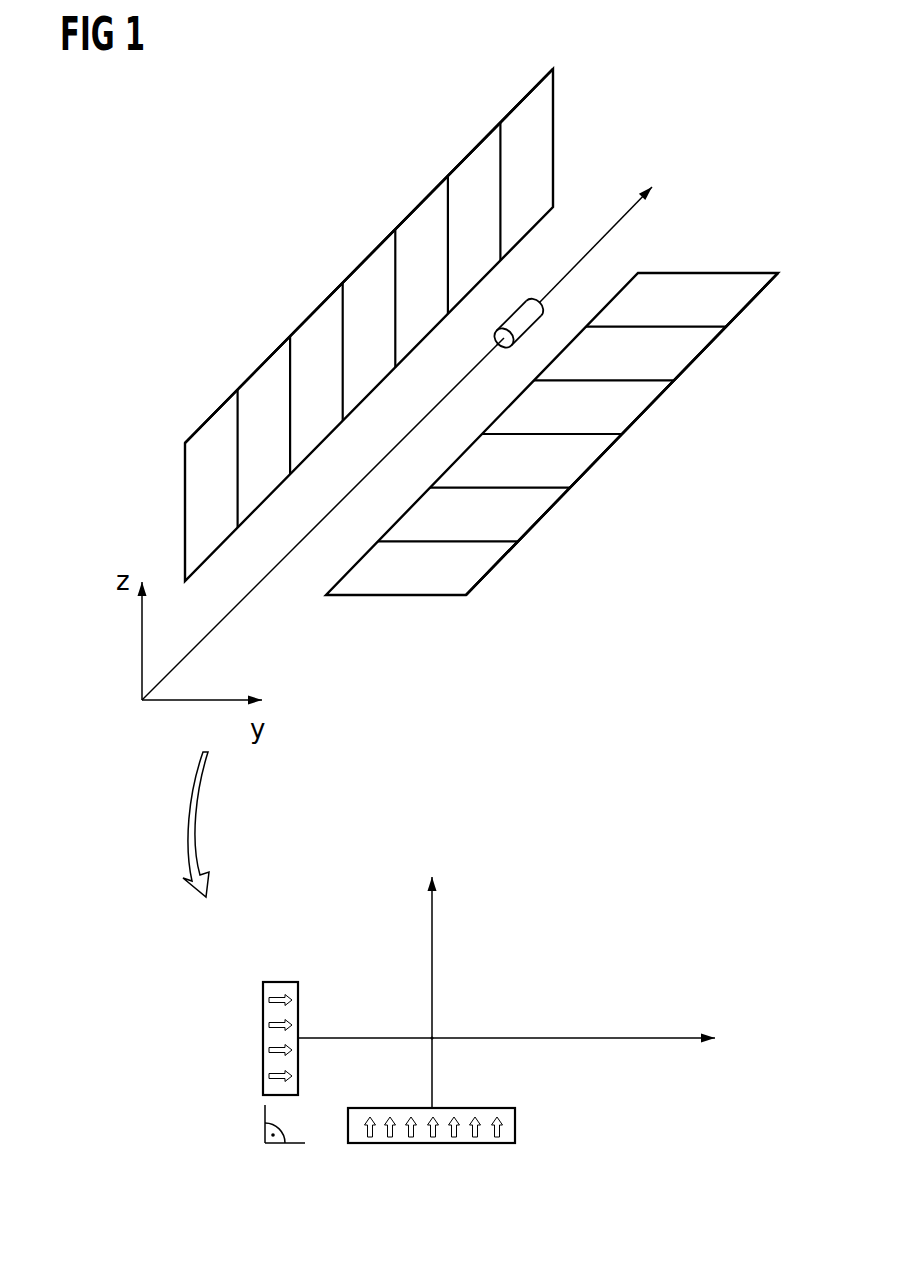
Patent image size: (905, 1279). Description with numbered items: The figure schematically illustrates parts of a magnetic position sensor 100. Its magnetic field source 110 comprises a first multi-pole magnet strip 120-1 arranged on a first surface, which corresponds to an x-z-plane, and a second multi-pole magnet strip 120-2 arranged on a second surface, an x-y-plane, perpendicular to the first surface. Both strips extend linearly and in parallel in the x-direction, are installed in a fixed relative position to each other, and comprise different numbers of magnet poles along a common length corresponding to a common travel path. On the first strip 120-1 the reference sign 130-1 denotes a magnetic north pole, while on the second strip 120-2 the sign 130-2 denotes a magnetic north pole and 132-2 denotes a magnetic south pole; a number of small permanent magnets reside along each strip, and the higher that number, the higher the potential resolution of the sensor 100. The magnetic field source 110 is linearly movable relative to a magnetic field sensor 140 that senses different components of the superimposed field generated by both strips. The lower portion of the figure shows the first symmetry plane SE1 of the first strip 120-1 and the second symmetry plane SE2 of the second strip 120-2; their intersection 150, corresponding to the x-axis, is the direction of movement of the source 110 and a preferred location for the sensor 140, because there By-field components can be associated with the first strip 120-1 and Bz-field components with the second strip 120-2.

The magnetic position sensor 100 is at (748, 98).
The magnetic field source 110 is at (611, 186).
The first multi-pole magnet strip 120-1 is at (168, 461).
The second multi-pole magnet strip 120-2 is at (474, 607).
The magnetic north pole 130-1 is at (422, 200).
The magnetic north pole 130-2 is at (698, 352).
The magnetic south pole 132-2 is at (367, 259).
The magnetic field sensor 140 is at (536, 298).
The intersection 150 is at (452, 1016).
The first symmetry plane SE1 is at (579, 1040).
The second symmetry plane SE2 is at (428, 956).